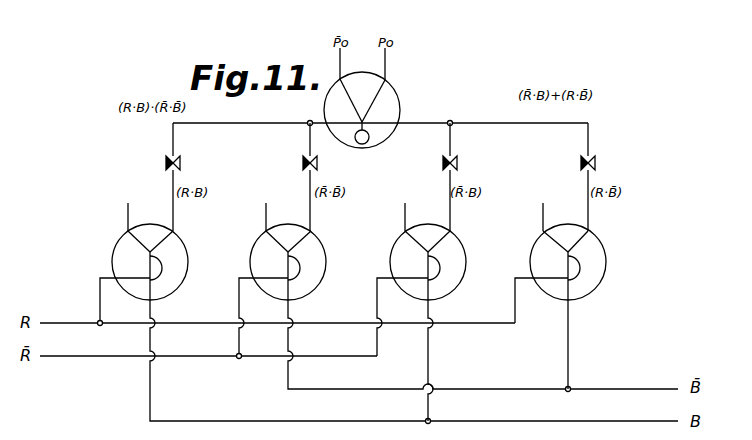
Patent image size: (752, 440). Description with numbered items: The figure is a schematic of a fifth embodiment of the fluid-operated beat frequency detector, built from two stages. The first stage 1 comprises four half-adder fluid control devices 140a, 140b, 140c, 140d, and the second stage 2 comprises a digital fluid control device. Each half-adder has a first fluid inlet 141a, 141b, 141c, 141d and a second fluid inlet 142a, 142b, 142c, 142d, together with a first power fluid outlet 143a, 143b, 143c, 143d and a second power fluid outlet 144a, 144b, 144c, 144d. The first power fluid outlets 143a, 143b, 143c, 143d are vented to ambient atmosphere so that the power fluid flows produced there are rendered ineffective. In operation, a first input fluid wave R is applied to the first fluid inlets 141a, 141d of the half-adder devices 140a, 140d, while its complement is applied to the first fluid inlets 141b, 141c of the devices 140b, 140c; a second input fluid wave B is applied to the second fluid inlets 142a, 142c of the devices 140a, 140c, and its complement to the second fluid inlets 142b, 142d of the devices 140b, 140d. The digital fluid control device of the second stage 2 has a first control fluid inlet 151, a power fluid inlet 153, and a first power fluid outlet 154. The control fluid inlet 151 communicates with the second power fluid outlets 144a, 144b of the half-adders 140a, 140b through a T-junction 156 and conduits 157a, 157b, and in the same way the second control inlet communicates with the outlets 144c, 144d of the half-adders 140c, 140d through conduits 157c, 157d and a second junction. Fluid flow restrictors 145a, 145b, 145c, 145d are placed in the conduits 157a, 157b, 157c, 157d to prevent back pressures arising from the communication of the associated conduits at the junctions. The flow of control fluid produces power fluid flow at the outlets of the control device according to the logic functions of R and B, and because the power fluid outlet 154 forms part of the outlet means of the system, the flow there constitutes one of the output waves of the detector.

The first stage 1 is at (606, 258).
The second stage 2 is at (400, 90).
The half-adder device 140a is at (112, 262).
The half-adder device 140b is at (250, 262).
The half-adder device 140c is at (390, 262).
The half-adder device 140d is at (530, 262).
The first fluid inlet 141a is at (100, 305).
The first fluid inlet 141b is at (239, 305).
The first fluid inlet 141c is at (377, 305).
The first fluid inlet 141d is at (515, 305).
The second fluid inlet 142a is at (152, 393).
The second fluid inlet 142b is at (290, 393).
The second fluid inlet 142c is at (430, 368).
The second fluid inlet 142d is at (570, 352).
The first power fluid outlet 143a is at (128, 203).
The first power fluid outlet 143b is at (266, 203).
The first power fluid outlet 143c is at (405, 203).
The first power fluid outlet 143d is at (543, 203).
The second power fluid outlet 144a is at (175, 218).
The second power fluid outlet 144b is at (312, 218).
The second power fluid outlet 144c is at (452, 218).
The second power fluid outlet 144d is at (590, 218).
The fluid flow restrictor 145a is at (166, 164).
The fluid flow restrictor 145b is at (303, 164).
The fluid flow restrictor 145c is at (458, 164).
The fluid flow restrictor 145d is at (597, 158).
The first control fluid inlet 151 is at (313, 128).
The power fluid inlet 153 is at (369, 139).
The first power fluid outlet 154 is at (387, 65).
The T-junction 156 is at (301, 121).
The conduit 157a is at (173, 143).
The conduit 157b is at (310, 143).
The conduit 157c is at (450, 143).
The conduit 157d is at (588, 143).